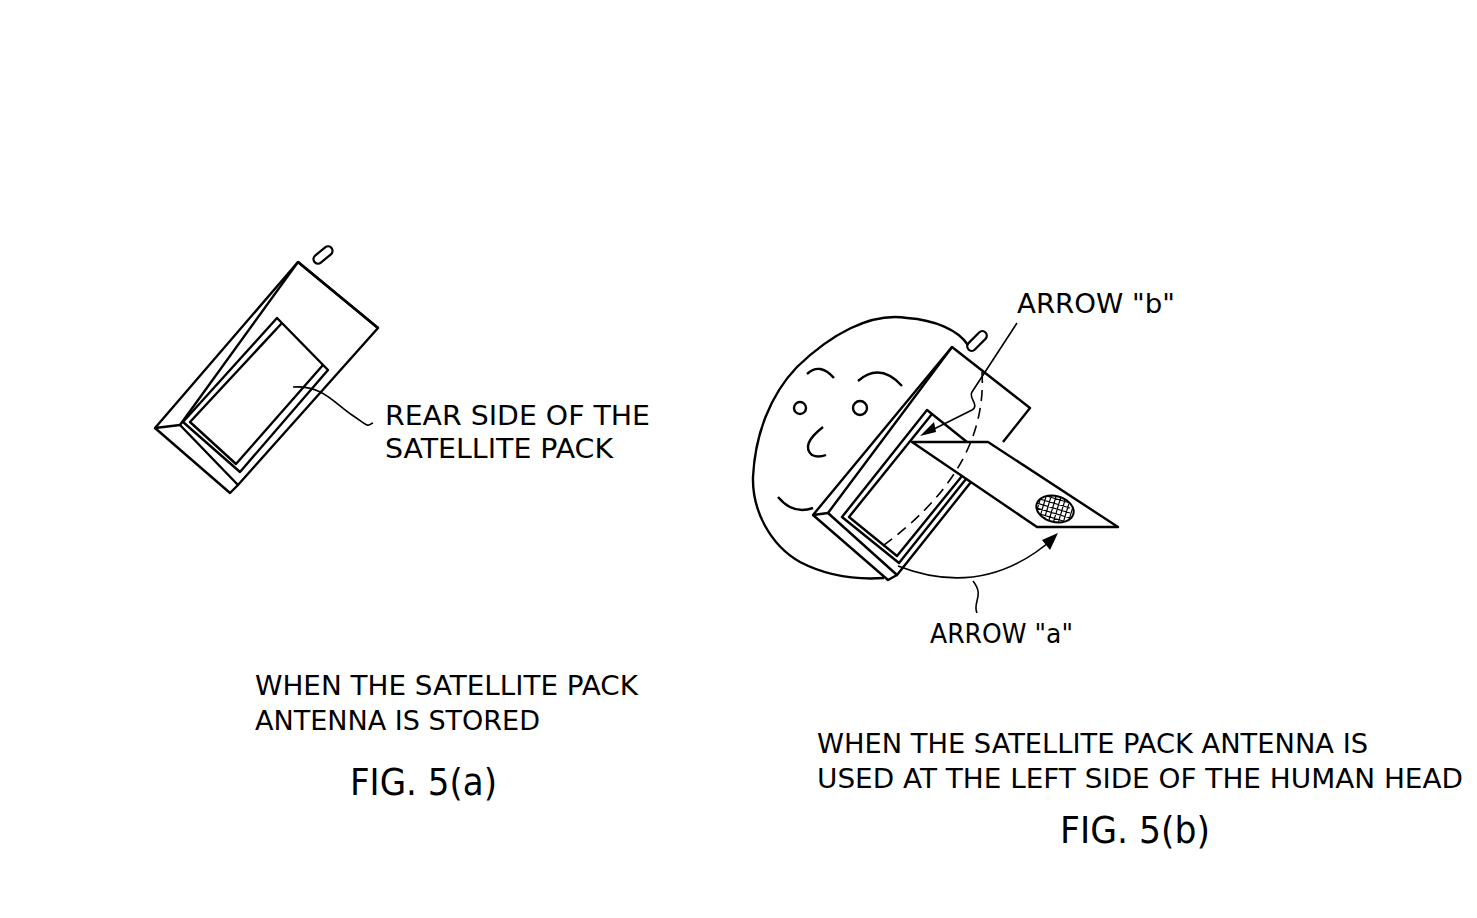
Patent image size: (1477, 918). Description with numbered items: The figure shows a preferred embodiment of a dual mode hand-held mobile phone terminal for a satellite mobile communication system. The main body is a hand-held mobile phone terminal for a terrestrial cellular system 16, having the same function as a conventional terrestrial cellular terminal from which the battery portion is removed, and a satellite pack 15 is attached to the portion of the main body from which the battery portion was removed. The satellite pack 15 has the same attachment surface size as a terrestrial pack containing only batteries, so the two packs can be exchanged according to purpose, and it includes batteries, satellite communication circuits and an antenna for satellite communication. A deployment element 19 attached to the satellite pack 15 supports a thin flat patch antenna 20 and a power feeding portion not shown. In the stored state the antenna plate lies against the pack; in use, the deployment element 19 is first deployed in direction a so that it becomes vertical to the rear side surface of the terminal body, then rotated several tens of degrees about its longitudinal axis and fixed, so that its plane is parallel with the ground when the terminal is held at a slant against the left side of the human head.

The satellite pack 15 is at (263, 420).
The hand-held mobile phone terminal for a terrestrial cellular system 16 is at (264, 307).
The deployment element 19 is at (1017, 477).
The patch antenna 20 is at (1073, 522).